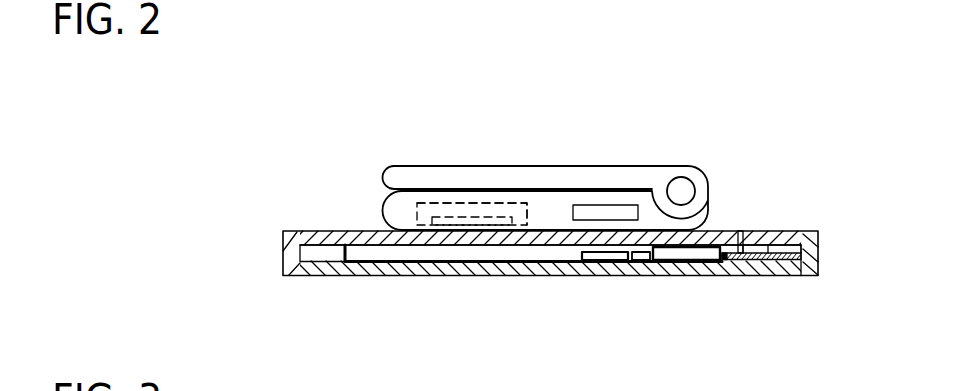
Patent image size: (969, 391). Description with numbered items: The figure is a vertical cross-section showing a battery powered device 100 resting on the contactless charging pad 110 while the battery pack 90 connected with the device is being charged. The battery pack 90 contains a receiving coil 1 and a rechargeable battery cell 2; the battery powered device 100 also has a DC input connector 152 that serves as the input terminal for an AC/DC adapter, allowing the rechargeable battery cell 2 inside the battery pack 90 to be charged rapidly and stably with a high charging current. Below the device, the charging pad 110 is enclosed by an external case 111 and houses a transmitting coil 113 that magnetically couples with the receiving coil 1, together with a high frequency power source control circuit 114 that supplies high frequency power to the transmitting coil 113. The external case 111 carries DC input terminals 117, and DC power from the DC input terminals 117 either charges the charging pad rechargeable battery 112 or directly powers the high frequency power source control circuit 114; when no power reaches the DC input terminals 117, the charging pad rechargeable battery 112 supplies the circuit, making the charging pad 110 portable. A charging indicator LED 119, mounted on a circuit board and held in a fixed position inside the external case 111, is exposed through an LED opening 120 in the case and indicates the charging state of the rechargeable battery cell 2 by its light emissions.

The receiving coil 1 is at (444, 204).
The rechargeable battery cell 2 is at (471, 204).
The battery pack 90 is at (553, 205).
The battery powered device 100 is at (695, 136).
The charging pad 110 is at (330, 177).
The external case 111 is at (360, 237).
The charging pad rechargeable battery 112 is at (667, 256).
The transmitting coil 113 is at (413, 252).
The high frequency power source control circuit 114 is at (614, 256).
The DC input terminals 117 is at (770, 248).
The charging indicator LED 119 is at (745, 230).
The LED opening 120 is at (746, 219).
The DC input connector 152 is at (610, 196).